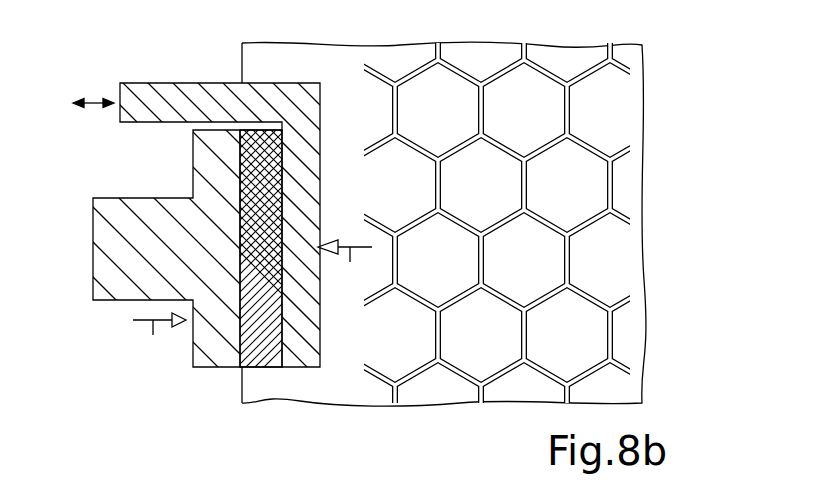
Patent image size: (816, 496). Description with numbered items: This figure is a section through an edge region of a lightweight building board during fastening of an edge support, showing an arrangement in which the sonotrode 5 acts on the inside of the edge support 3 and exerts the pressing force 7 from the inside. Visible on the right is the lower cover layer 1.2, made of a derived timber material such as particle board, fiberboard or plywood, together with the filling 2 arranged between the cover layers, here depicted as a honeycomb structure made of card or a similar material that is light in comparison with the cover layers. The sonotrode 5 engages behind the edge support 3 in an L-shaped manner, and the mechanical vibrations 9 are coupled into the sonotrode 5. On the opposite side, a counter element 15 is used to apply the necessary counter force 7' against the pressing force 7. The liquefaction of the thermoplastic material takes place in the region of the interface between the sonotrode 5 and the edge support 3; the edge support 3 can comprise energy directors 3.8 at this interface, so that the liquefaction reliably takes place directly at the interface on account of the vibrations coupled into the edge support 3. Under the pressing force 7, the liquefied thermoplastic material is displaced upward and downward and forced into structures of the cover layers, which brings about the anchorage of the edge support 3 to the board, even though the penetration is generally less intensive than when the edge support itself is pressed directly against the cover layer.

The lower cover layer 1.2 is at (642, 116).
The filling 2 is at (612, 182).
The edge support 3 is at (230, 158).
The energy directors 3.8 is at (278, 138).
The sonotrode 5 is at (160, 83).
The pressing force 7 is at (345, 271).
The counter force 7' is at (159, 340).
The mechanical vibrations 9 is at (96, 98).
The counter element 15 is at (137, 197).